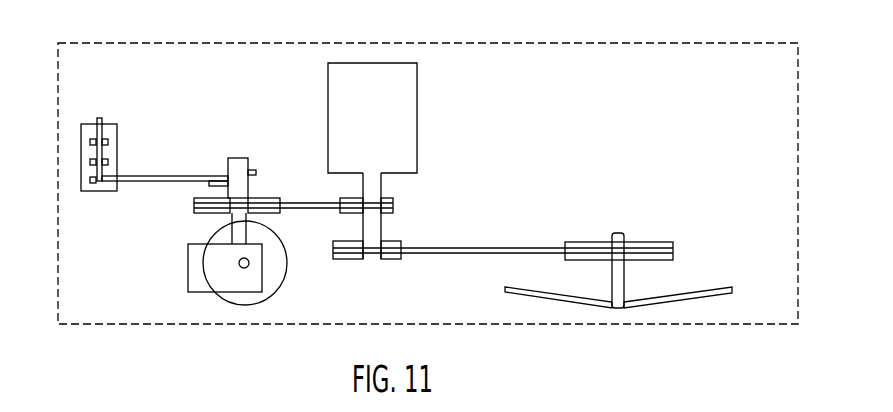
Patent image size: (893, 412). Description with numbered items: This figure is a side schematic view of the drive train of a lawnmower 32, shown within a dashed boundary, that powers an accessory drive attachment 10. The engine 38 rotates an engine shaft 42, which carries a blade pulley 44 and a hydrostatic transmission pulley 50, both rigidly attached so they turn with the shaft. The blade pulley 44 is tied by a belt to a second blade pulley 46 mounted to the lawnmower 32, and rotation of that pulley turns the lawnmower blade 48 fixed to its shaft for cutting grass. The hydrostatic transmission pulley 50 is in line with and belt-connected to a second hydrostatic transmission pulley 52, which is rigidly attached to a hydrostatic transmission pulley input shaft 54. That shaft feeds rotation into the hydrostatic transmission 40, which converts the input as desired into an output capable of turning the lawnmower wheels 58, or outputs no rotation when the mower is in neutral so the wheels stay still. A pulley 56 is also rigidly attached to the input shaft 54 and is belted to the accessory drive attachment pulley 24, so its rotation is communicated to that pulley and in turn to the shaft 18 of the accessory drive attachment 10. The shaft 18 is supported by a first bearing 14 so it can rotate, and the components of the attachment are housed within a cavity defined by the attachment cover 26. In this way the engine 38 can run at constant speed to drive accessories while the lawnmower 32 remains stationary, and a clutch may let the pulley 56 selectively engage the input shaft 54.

The accessory drive attachment 10 is at (117, 133).
The first bearing 14 is at (90, 141).
The shaft 18 is at (100, 118).
The accessory drive attachment pulley 24 is at (103, 181).
The attachment cover 26 is at (92, 162).
The lawnmower 32 is at (530, 325).
The engine 38 is at (406, 113).
The hydrostatic transmission 40 is at (193, 278).
The engine shaft 42 is at (373, 231).
The blade pulley 44 is at (392, 259).
The second blade pulley 46 is at (668, 242).
The lawnmower blade 48 is at (693, 296).
The hydrostatic transmission pulley 50 is at (388, 199).
The second hydrostatic transmission pulley 52 is at (273, 198).
The hydrostatic transmission pulley input shaft 54 is at (246, 185).
The pulley 56 is at (220, 176).
The lawnmower wheels 58 is at (285, 276).